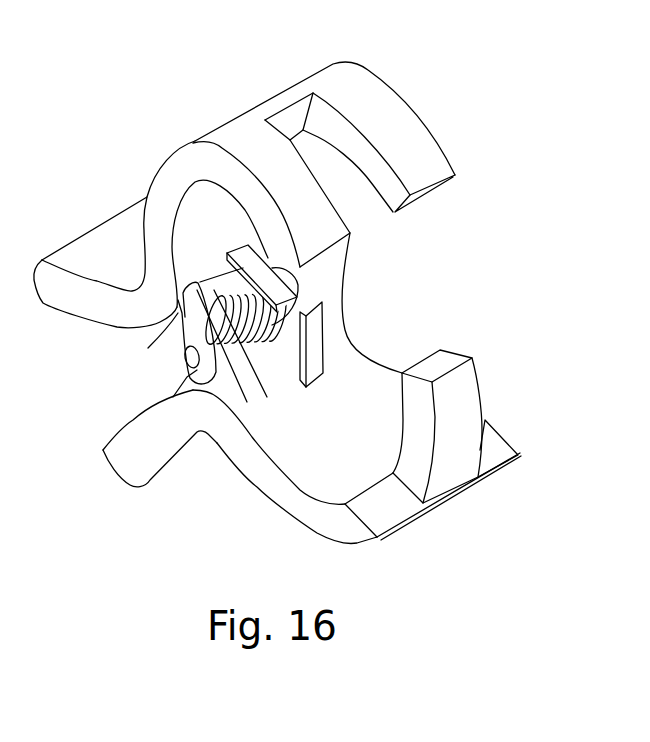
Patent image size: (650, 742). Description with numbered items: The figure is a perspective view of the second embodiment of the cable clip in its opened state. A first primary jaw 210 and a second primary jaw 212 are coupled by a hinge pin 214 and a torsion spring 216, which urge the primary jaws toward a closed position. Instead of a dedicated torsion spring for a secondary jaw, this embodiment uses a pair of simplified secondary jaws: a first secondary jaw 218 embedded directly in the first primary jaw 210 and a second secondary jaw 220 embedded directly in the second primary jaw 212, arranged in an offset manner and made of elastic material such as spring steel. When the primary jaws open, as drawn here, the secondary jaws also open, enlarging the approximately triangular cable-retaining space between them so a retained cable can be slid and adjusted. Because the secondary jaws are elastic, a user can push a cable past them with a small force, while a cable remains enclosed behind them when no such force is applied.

The first primary jaw 210 is at (370, 100).
The second primary jaw 212 is at (394, 508).
The hinge pin 214 is at (188, 359).
The torsion spring 216 is at (270, 340).
The first secondary jaw 218 is at (248, 260).
The second secondary jaw 220 is at (312, 367).